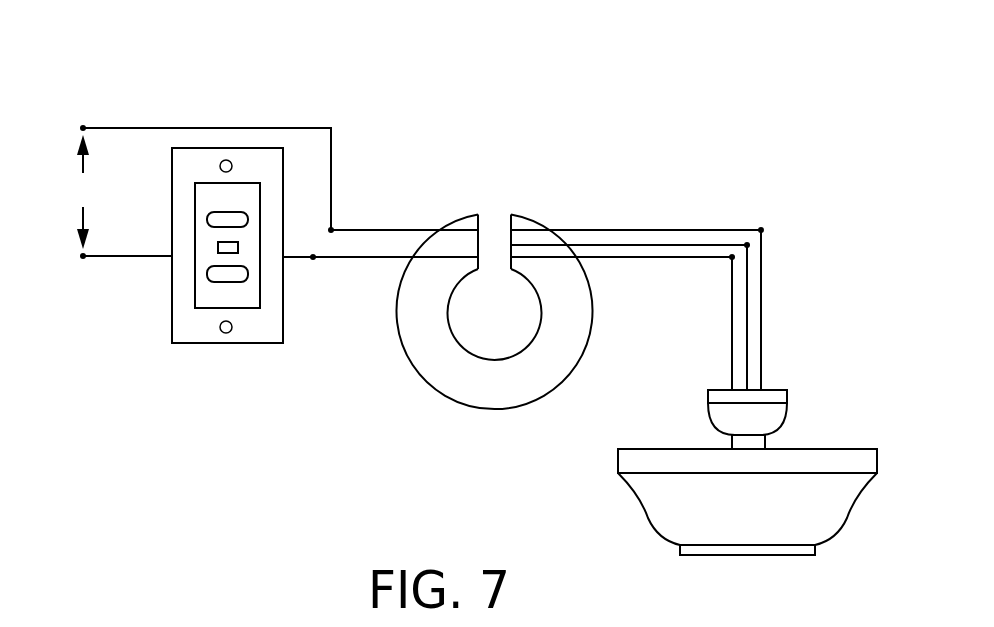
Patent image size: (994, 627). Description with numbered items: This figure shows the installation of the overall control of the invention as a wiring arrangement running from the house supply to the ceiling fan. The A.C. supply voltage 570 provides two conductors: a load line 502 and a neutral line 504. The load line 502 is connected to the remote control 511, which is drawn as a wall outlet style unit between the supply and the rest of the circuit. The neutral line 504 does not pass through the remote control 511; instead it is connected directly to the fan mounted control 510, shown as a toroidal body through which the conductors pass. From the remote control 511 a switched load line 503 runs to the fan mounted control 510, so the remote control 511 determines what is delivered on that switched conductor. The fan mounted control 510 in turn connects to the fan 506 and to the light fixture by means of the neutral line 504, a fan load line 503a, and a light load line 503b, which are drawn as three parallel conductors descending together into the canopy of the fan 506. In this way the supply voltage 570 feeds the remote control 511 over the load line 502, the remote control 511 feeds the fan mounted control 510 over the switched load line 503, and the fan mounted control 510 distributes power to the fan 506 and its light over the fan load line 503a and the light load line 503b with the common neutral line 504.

The A.C. supply voltage 570 is at (48, 172).
The neutral line 504 is at (237, 128).
The load line 502 is at (153, 256).
The remote control 511 is at (228, 343).
The switched load line 503 is at (313, 257).
The fan load line 503a is at (747, 289).
The light load line 503b is at (733, 318).
The fan mounted control 510 is at (492, 411).
The fan 506 is at (858, 495).